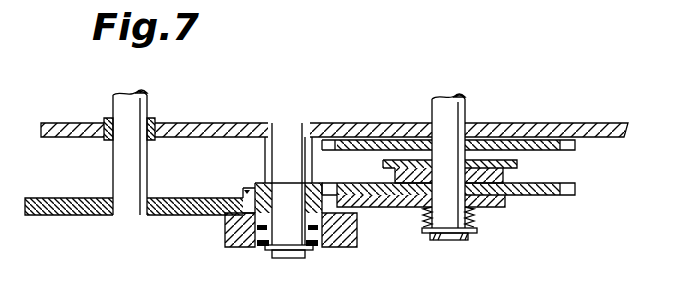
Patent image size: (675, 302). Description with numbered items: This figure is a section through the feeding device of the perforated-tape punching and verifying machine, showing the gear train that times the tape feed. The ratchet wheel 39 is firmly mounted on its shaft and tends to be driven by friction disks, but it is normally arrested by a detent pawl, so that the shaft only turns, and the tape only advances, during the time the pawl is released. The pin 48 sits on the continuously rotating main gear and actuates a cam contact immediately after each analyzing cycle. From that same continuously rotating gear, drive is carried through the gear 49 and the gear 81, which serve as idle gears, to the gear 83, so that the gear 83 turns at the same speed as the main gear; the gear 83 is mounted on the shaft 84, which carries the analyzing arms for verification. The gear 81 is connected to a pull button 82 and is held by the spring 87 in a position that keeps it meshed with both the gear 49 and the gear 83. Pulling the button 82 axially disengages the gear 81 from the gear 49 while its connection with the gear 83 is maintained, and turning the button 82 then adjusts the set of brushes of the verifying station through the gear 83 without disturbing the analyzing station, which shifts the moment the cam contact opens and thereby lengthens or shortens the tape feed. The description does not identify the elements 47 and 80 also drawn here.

The ratchet wheel 39 is at (494, 164).
The tube 47 is at (438, 112).
The pin 48 is at (487, 197).
The gear 49 is at (543, 190).
The upper plate 80 is at (541, 142).
The gear 81 is at (225, 217).
The pull button 82 is at (223, 230).
The gear 83 is at (55, 205).
The shaft 84 is at (125, 200).
The spring 87 is at (322, 246).